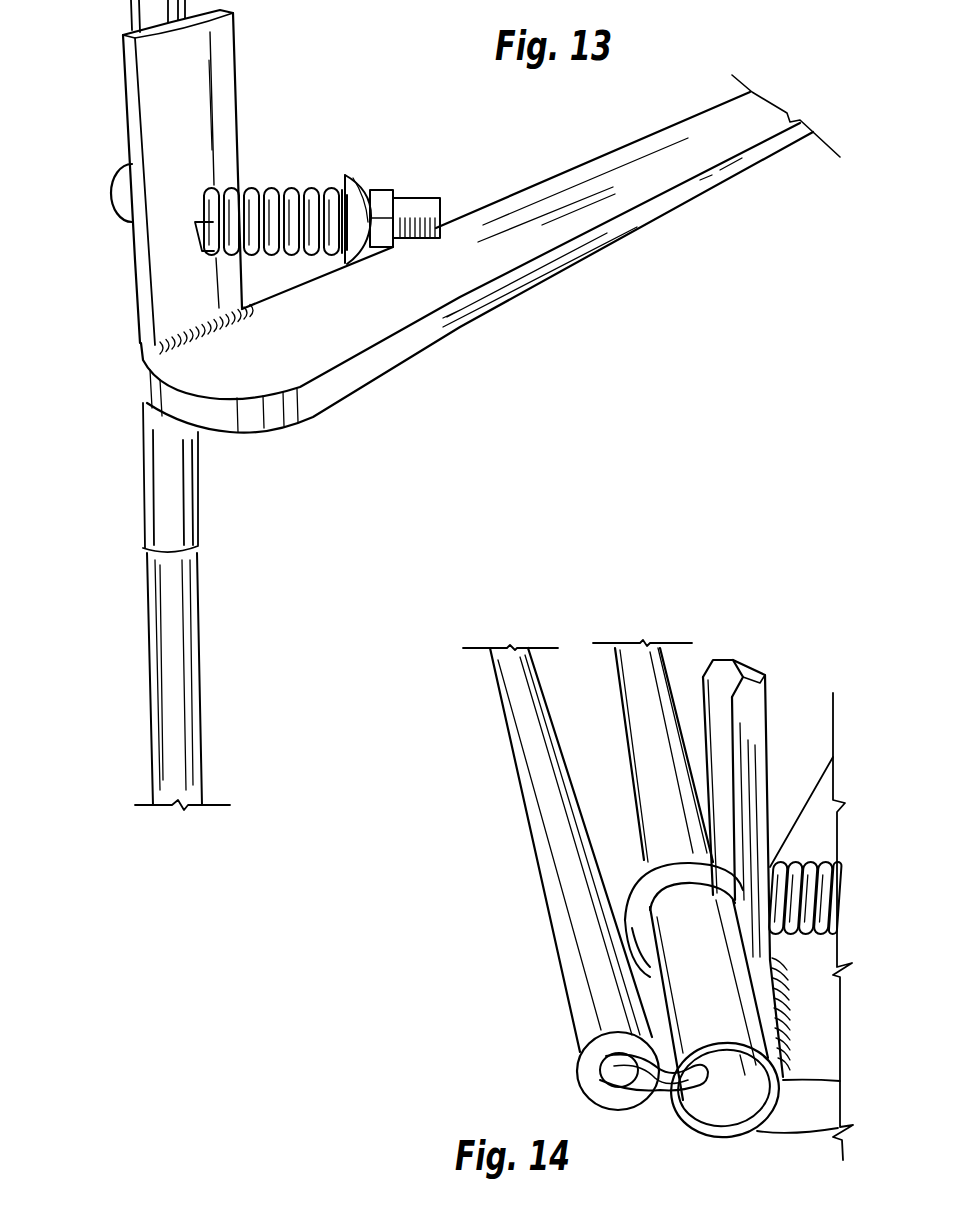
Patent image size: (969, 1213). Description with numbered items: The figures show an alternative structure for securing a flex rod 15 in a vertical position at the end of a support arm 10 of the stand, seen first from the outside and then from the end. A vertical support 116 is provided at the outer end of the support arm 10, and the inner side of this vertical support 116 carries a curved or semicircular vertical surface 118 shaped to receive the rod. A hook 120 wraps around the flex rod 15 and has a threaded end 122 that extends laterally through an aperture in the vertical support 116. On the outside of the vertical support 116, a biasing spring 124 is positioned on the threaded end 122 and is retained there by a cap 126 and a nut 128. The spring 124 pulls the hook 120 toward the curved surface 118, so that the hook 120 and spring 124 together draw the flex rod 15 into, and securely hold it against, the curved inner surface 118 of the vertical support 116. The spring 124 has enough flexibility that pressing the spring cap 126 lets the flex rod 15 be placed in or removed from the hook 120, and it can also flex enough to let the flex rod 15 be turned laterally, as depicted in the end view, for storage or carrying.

In FIG. 13, the support arm 10 is at (300, 356).
In FIG. 13, the flex rod 15 is at (180, 405).
In FIG. 14, the flex rod 15 is at (570, 931).
In FIG. 13, the vertical support 116 is at (182, 83).
In FIG. 14, the vertical support 116 is at (752, 670).
In FIG. 14, the curved vertical surface 118 is at (707, 670).
In FIG. 13, the hook 120 is at (123, 170).
In FIG. 14, the hook 120 is at (650, 883).
In FIG. 13, the threaded end 122 is at (420, 198).
In FIG. 13, the biasing spring 124 is at (246, 193).
In FIG. 13, the cap 126 is at (352, 183).
In FIG. 13, the nut 128 is at (381, 197).